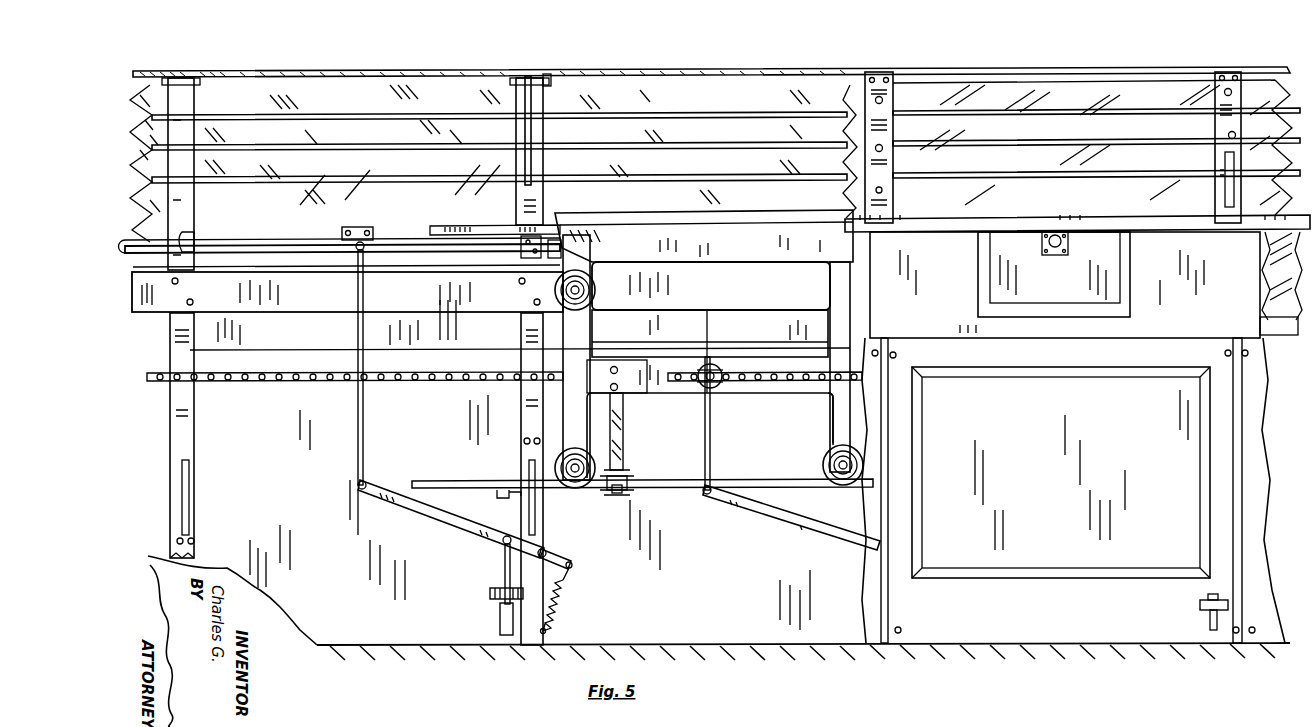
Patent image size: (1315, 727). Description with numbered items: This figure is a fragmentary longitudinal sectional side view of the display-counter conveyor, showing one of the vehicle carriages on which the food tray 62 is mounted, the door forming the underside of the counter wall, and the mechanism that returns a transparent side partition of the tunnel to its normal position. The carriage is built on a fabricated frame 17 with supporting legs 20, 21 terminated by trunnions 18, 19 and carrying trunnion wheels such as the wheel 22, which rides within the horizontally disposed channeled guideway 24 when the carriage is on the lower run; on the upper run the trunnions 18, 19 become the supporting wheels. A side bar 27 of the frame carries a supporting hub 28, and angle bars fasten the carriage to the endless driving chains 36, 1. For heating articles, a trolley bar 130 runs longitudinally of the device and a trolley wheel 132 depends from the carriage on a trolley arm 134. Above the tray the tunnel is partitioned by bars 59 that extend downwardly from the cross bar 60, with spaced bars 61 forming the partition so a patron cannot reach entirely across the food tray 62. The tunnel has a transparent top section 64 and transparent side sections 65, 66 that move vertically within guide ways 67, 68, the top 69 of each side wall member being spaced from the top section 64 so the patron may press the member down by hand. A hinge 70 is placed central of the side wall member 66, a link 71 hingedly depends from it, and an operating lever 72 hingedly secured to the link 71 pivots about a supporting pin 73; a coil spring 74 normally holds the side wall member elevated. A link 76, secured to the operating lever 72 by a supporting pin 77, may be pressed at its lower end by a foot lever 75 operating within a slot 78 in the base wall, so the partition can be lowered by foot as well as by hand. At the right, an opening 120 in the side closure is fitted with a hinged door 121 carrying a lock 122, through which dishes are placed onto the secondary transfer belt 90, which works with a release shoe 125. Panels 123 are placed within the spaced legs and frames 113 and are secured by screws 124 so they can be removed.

The endless driving chain 1 is at (260, 382).
The fabricated frame 17 is at (582, 324).
The trunnion 18 is at (608, 466).
The trunnion 19 is at (824, 457).
The supporting leg 20 is at (580, 430).
The supporting leg 21 is at (838, 418).
The trunnion wheel 22 is at (594, 293).
The channeled guideway 24 is at (305, 302).
The side bar 27 is at (665, 390).
The supporting hub 28 is at (712, 388).
The endless driving chain 36 is at (228, 381).
The bar 59 is at (531, 113).
The cross bar 60 is at (550, 73).
The spaced bar 61 is at (583, 185).
The food tray 62 is at (622, 213).
The top section 64 is at (336, 76).
The side section 65 is at (985, 100).
The side section 66 is at (745, 100).
The guide way 67 is at (188, 103).
The guide way 68 is at (528, 78).
The top of transparent side wall member 69 is at (385, 88).
The hinge 70 is at (361, 227).
The link 71 is at (363, 407).
The operating lever 72 is at (406, 503).
The supporting pin 73 is at (547, 552).
The coil spring 74 is at (560, 598).
The foot lever 75 is at (490, 593).
The link 76 is at (505, 568).
The supporting pin 77 is at (507, 536).
The slot 78 is at (504, 614).
The transfer belt 90 is at (1275, 335).
The frame 113 is at (574, 566).
The opening 120 is at (1120, 280).
The door 121 is at (1000, 260).
The lock 122 is at (1055, 255).
The panel 123 is at (1080, 645).
The screw 124 is at (896, 355).
The release shoe 125 is at (719, 480).
The trolley bar 130 is at (466, 481).
The trolley wheel 132 is at (618, 490).
The trolley arm 134 is at (632, 480).